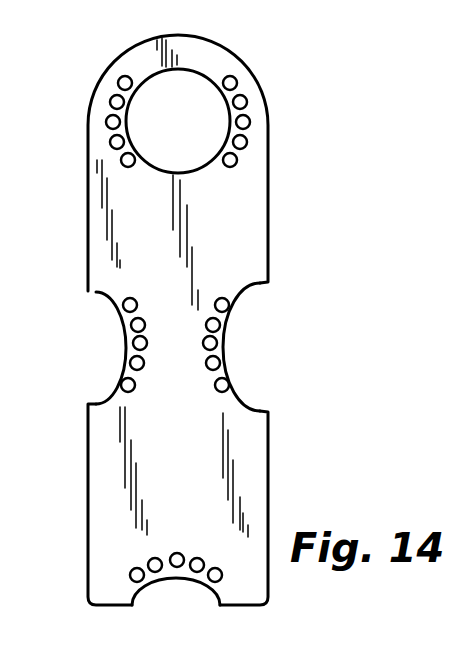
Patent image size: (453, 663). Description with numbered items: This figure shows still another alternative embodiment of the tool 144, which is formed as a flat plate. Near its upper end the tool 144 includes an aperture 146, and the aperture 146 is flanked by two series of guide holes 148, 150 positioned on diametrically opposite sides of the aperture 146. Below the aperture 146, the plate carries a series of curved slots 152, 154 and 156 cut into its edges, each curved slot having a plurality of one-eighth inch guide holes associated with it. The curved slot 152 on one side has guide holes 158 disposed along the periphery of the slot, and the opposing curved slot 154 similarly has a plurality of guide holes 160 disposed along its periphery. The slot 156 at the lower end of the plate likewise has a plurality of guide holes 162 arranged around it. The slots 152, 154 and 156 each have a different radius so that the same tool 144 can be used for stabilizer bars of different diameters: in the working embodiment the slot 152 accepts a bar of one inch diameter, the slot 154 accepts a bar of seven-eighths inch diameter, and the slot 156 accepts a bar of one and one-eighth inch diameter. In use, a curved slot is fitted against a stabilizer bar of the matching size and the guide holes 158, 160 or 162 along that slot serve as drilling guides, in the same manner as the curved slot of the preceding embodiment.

The tool 144 is at (277, 272).
The aperture 146 is at (224, 102).
The left array of conductor holes 148 is at (121, 160).
The right array of conductor holes 150 is at (237, 160).
The curved slot 152 is at (124, 335).
The curved slot 154 is at (225, 365).
The slot 156 is at (191, 580).
The guide holes 158 is at (135, 382).
The guide holes 160 is at (215, 386).
The guide holes 162 is at (211, 570).